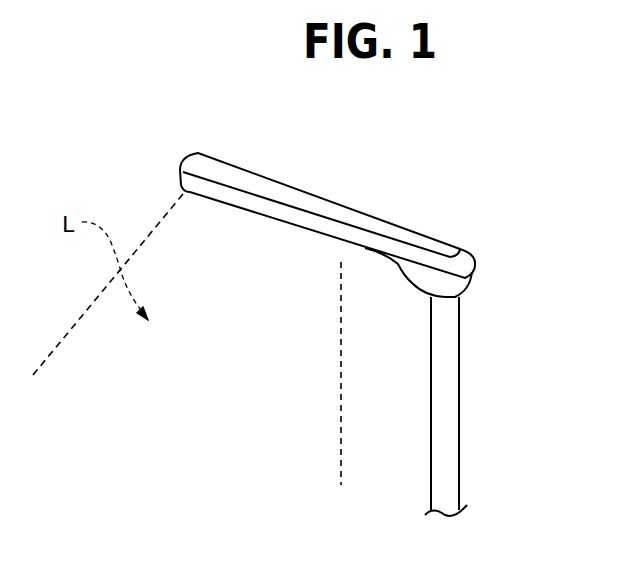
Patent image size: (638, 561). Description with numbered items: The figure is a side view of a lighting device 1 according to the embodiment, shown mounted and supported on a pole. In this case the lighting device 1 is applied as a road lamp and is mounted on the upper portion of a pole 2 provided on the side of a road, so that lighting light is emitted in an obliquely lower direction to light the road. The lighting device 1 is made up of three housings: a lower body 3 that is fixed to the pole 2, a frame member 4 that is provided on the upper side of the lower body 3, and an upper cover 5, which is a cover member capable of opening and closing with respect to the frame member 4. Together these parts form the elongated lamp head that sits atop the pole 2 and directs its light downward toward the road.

The lighting device 1 is at (478, 206).
The pole 2 is at (461, 361).
The lower body 3 is at (476, 270).
The frame member 4 is at (466, 247).
The upper cover 5 is at (310, 194).